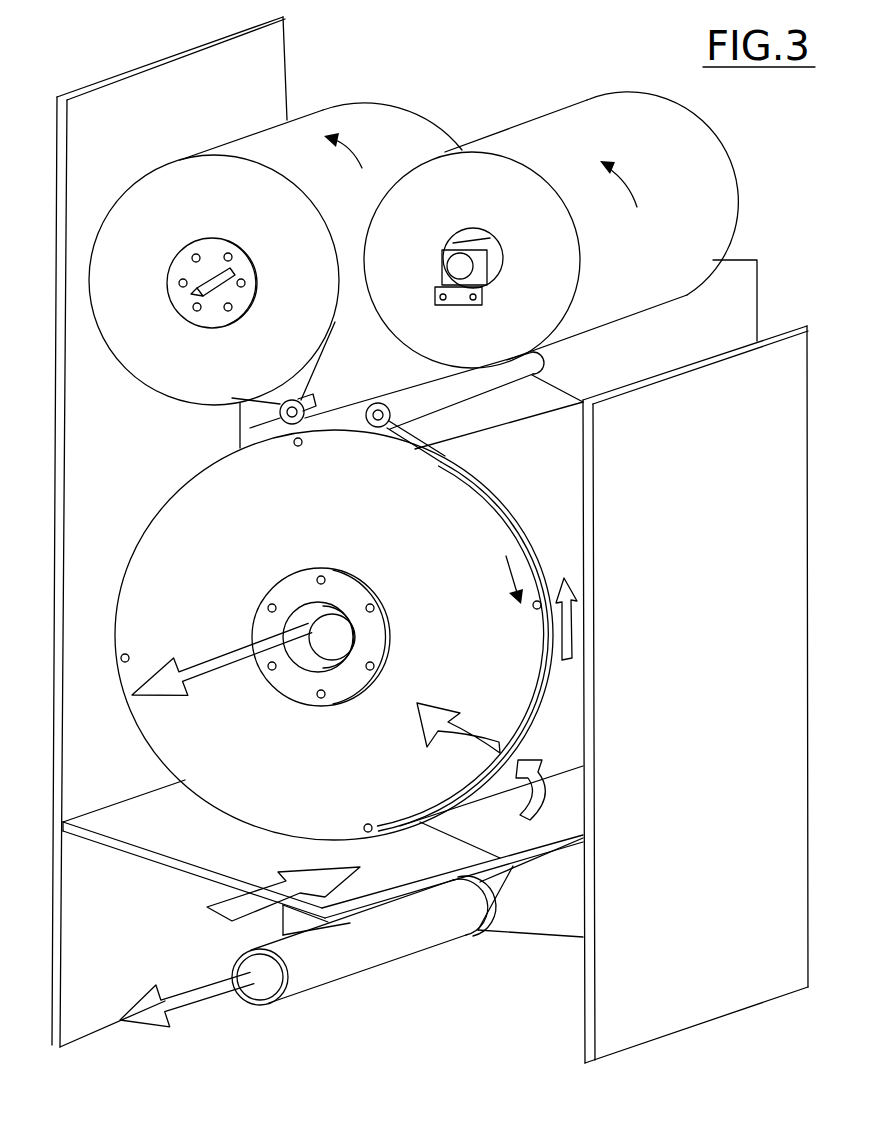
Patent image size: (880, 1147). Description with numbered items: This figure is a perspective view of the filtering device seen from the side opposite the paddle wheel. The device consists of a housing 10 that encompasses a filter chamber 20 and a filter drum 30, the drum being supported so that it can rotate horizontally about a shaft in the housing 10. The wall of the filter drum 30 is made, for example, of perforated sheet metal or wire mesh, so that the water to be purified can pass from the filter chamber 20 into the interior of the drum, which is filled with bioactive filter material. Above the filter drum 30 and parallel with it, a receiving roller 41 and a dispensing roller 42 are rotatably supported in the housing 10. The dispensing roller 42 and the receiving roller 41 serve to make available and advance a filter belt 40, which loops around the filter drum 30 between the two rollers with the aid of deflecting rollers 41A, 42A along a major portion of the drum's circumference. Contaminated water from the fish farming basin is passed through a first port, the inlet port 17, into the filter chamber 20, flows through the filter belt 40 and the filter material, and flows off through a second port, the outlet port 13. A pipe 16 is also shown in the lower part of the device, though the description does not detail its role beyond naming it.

The housing 10 is at (684, 578).
The filter chamber 20 is at (120, 546).
The filter drum 30 is at (298, 768).
The filter belt 40 is at (392, 374).
The receiving roller 41 is at (247, 297).
The dispensing roller 42 is at (492, 262).
The deflecting roller 41A is at (279, 418).
The deflecting roller 42A is at (382, 428).
The pipe 16 is at (400, 942).
The outlet port 13 is at (216, 848).
The inlet port 17 is at (252, 905).